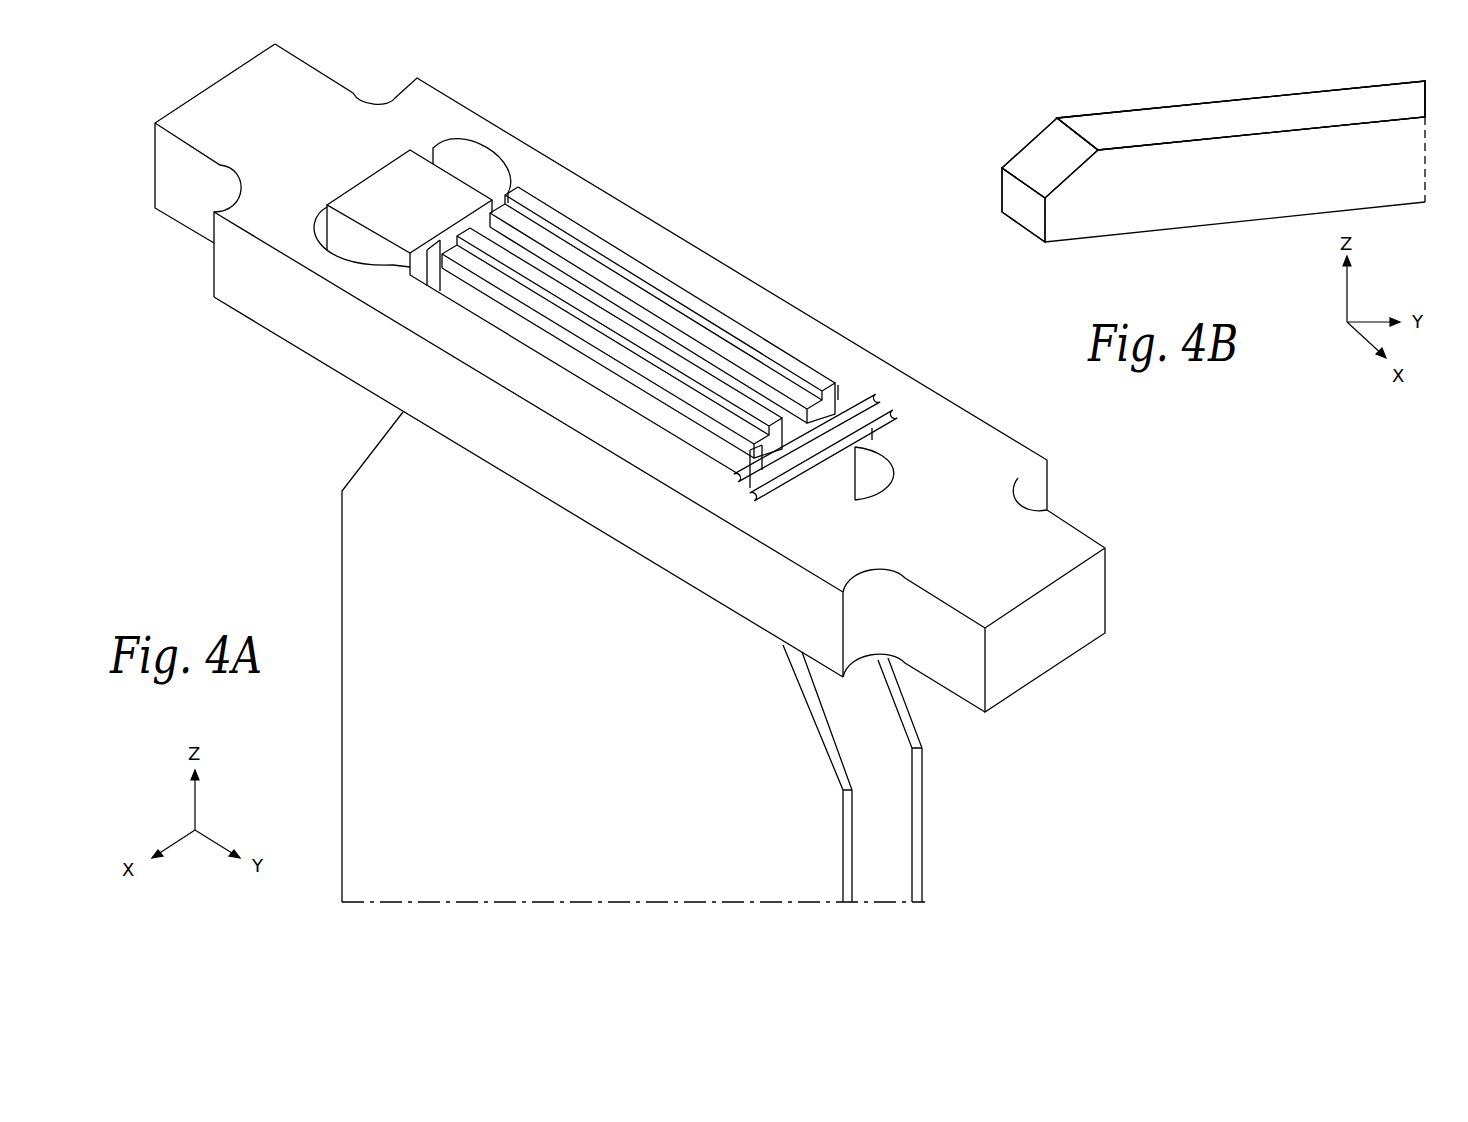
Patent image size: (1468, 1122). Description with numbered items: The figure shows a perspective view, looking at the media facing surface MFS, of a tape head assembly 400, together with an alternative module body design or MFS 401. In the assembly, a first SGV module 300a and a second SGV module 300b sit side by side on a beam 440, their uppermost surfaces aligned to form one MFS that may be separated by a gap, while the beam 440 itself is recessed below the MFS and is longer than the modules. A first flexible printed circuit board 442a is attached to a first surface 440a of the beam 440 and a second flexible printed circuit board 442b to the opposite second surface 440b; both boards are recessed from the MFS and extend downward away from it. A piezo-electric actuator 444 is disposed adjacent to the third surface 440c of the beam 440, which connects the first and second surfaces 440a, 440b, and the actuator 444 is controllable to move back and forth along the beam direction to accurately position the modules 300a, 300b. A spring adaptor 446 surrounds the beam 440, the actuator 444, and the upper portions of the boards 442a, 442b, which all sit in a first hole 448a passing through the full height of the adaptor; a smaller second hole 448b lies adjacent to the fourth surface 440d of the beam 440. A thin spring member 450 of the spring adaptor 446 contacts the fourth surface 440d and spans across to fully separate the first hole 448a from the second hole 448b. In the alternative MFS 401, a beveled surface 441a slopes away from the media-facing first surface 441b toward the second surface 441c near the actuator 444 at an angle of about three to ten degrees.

In FIG. 4A, the tape head assembly 400 is at (688, 161).
In FIG. 4B, the alternative MFS 401 is at (1022, 82).
In FIG. 4A, the first SGV module 300a is at (597, 258).
In FIG. 4B, the first SGV module 300a is at (1145, 197).
In FIG. 4A, the second SGV module 300b is at (592, 330).
In FIG. 4B, the second SGV module 300b is at (1241, 115).
In FIG. 4A, the beam 440 is at (788, 435).
In FIG. 4A, the first surface of the beam 440a is at (765, 465).
In FIG. 4A, the second surface of the beam 440b is at (838, 390).
In FIG. 4A, the third surface of the beam 440c is at (480, 210).
In FIG. 4A, the fourth surface of the beam 440d is at (872, 433).
In FIG. 4B, the beveled surface 441a is at (1038, 153).
In FIG. 4B, the first surface 441b is at (1202, 115).
In FIG. 4B, the second surface 441c is at (1015, 197).
In FIG. 4A, the first flexible printed circuit board 442a is at (622, 742).
In FIG. 4A, the second flexible printed circuit board 442b is at (896, 742).
In FIG. 4A, the actuator 444 is at (383, 185).
In FIG. 4A, the spring adaptor 446 is at (282, 122).
In FIG. 4A, the first hole 448a is at (478, 180).
In FIG. 4A, the second hole 448b is at (866, 475).
In FIG. 4A, the spring member 450 is at (808, 445).
In FIG. 4A, the media facing surface MFS is at (543, 200).